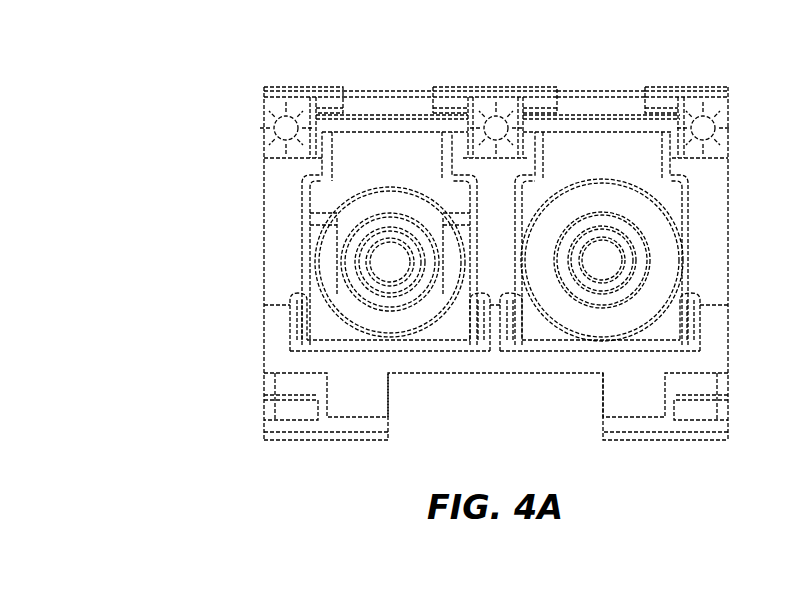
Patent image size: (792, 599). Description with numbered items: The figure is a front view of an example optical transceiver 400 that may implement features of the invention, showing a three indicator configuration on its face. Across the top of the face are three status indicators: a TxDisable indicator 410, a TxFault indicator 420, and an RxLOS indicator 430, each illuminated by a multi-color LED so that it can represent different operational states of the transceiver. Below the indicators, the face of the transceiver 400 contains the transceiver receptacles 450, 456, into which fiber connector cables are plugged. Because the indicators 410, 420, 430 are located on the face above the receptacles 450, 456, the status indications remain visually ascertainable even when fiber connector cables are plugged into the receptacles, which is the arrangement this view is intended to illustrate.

The transceiver 400 is at (432, 235).
The TxDisable indicator 410 is at (281, 100).
The TxFault indicator 420 is at (490, 100).
The RxLOS indicator 430 is at (695, 100).
The transceiver receptacle 450 is at (393, 278).
The second camera lens 456 is at (602, 273).